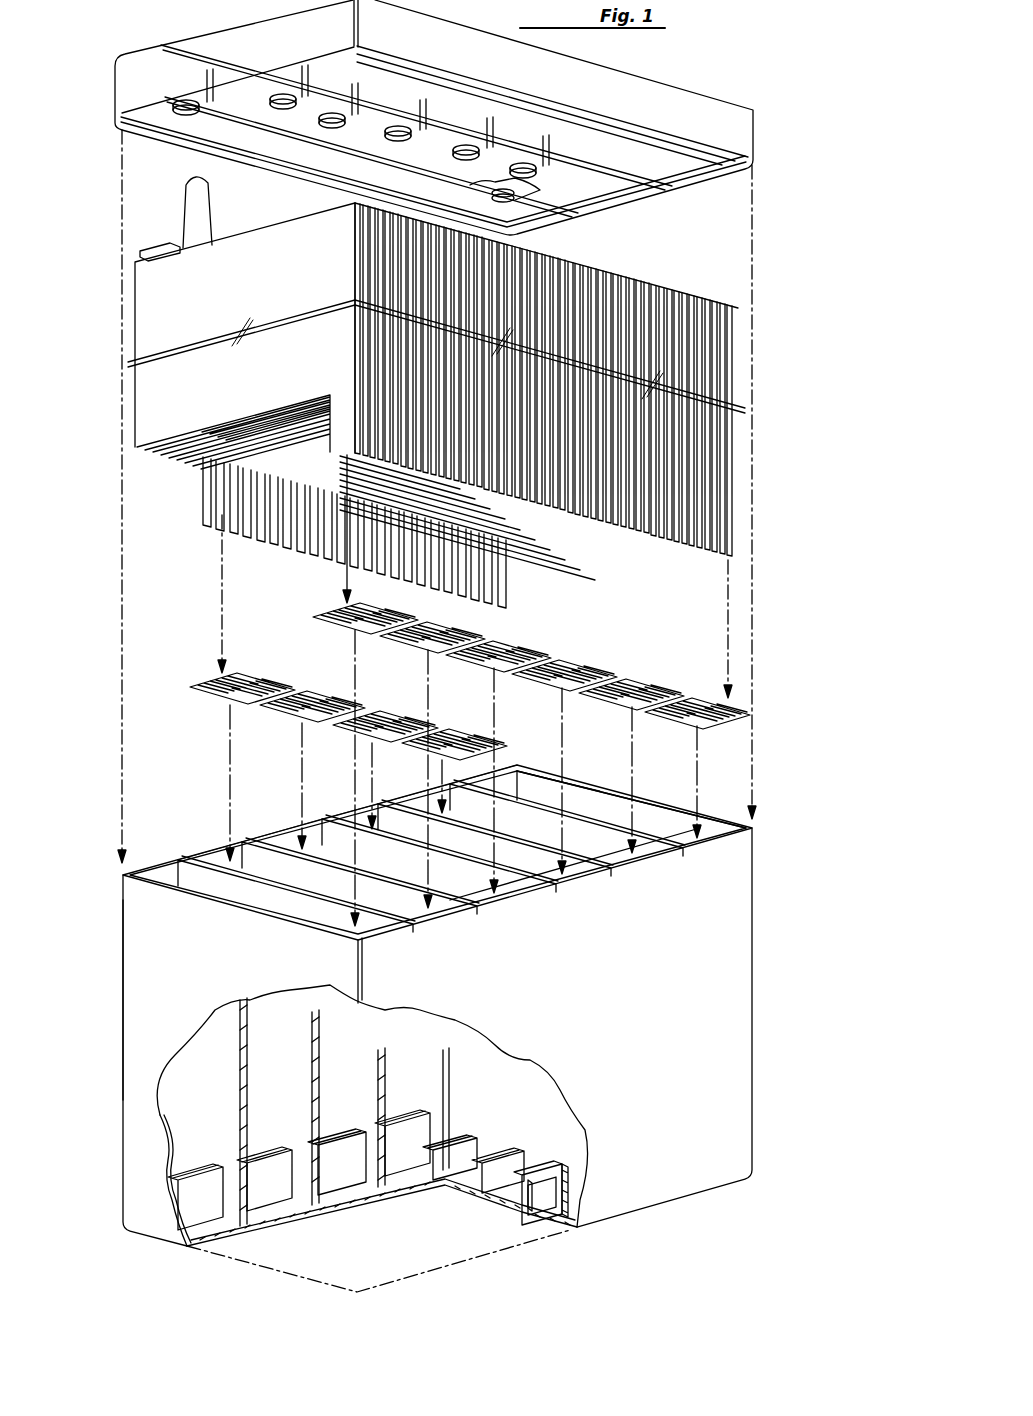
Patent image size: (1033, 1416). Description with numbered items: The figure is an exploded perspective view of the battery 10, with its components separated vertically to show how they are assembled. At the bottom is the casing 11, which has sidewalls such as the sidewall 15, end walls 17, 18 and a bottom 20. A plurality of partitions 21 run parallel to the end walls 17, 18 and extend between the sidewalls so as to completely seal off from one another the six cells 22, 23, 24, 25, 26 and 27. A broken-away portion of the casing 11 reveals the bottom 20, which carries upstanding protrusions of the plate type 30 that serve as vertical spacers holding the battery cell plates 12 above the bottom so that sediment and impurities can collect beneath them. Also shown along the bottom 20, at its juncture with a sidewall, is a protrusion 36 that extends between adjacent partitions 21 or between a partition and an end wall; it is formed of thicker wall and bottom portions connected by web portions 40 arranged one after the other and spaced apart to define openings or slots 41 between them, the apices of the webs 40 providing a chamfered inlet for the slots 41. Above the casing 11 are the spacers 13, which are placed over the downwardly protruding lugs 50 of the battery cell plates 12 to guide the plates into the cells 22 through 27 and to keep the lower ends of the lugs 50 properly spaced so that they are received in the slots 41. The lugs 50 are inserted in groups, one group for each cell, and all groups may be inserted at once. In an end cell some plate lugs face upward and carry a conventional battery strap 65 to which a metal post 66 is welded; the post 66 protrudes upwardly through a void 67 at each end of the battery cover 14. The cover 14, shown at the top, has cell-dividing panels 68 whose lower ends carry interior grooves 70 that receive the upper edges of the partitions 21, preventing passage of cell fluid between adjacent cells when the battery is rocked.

The battery 10 is at (760, 861).
The casing 11 is at (735, 947).
The battery cell plates 12 is at (746, 462).
The spacers 13 is at (650, 690).
The battery cover 14 is at (155, 82).
The sidewall 15 is at (585, 940).
The end wall 17 is at (590, 795).
The end wall 18 is at (150, 935).
The bottom 20 is at (462, 1200).
The partitions 21 is at (313, 882).
The cell 22 is at (211, 889).
The cell 23 is at (269, 874).
The cell 24 is at (347, 851).
The cell 25 is at (407, 835).
The cell 26 is at (479, 817).
The cell 27 is at (546, 798).
The upstanding protrusions of the plate type 30 is at (458, 1140).
The protrusion 36 is at (545, 1152).
The web portions 40 is at (578, 1200).
The openings or slots 41 is at (565, 1168).
The lugs 50 is at (745, 520).
The battery strap 65 is at (172, 245).
The metal post 66 is at (205, 200).
The void 67 is at (188, 112).
The cell-dividing panels 68 is at (435, 85).
The interior grooves 70 is at (488, 93).